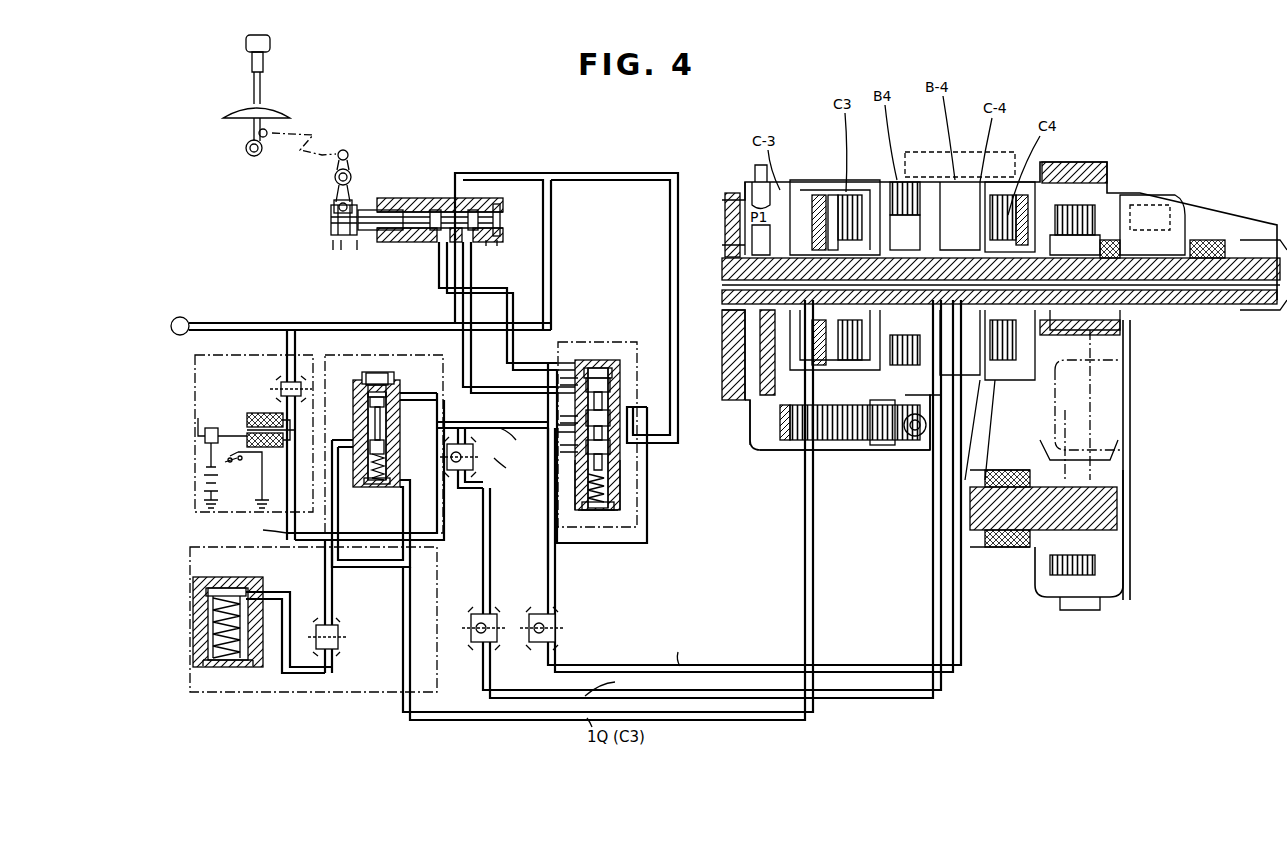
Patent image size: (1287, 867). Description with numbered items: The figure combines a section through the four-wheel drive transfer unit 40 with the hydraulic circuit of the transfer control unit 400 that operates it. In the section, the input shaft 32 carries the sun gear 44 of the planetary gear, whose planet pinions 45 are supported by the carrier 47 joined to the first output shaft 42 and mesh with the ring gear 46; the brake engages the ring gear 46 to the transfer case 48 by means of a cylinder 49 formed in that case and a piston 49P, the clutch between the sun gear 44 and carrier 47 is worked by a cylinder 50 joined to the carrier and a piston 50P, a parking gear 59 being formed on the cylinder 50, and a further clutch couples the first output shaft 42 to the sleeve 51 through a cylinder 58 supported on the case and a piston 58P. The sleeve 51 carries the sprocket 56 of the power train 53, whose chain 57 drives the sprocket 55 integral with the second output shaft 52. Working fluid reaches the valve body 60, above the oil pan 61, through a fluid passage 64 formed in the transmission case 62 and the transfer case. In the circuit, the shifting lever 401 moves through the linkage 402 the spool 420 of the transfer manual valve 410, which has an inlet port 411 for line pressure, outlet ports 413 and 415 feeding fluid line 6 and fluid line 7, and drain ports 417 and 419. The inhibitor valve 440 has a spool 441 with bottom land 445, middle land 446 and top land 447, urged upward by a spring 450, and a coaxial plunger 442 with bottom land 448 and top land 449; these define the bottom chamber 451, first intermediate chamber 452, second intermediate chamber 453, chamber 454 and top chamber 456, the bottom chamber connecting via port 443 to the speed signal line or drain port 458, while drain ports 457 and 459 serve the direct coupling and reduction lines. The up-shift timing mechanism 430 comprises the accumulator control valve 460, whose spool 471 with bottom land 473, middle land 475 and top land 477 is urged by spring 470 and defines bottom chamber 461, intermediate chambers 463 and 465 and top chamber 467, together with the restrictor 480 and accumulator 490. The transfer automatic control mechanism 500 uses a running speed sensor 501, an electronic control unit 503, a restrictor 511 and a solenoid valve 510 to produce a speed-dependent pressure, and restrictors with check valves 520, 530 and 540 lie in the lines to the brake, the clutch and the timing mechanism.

The shifting lever 401 is at (270, 43).
The linkage 402 is at (347, 152).
The transfer manual valve 410 is at (447, 216).
The inlet port 411 is at (476, 204).
The outlet port 413 is at (437, 252).
The outlet port 415 is at (501, 236).
The drain port 417 is at (415, 245).
The drain port 419 is at (494, 241).
The spool 420 is at (330, 221).
The transfer control unit 400 is at (562, 152).
The fluid line 6 is at (448, 294).
The fluid line 7 is at (472, 268).
The transfer automatic control mechanism 500 is at (252, 358).
The restrictor 511 is at (281, 387).
The solenoid valve 510 is at (245, 410).
The electronic control unit 503 is at (241, 423).
The running speed sensor 501 is at (236, 476).
The up-shift timing mechanism 430 is at (355, 358).
The accumulator control valve 460 is at (392, 450).
The upper intermediate chamber 465 is at (365, 400).
The top chamber 467 is at (390, 360).
The top land 477 is at (393, 380).
The middle land 475 is at (386, 402).
The lower intermediate chamber 463 is at (386, 436).
The bottom land 473 is at (387, 466).
The spool 471 is at (362, 484).
The spring 470 is at (380, 486).
The bottom chamber 461 is at (370, 490).
The accumulator 490 is at (238, 566).
The restrictor 480 is at (340, 648).
The restrictor with check valve 520 is at (500, 605).
The restrictor with check valve 530 is at (565, 609).
The restrictor with check valve 540 is at (470, 470).
The inhibitor valve 440 is at (592, 430).
The top chamber 456 is at (598, 372).
The top land 449 is at (606, 386).
The plunger 442 is at (610, 395).
The bottom land 448 is at (606, 418).
The top land 447 is at (606, 432).
The spool 441 is at (606, 448).
The second intermediate chamber 453 is at (606, 440).
The middle land 446 is at (606, 450).
The first intermediate chamber 452 is at (606, 464).
The drain port 458 is at (606, 478).
The port 443 is at (606, 495).
The bottom chamber 451 is at (600, 505).
The chamber 454 is at (572, 405).
The drain port 457 is at (572, 418).
The drain port 459 is at (575, 465).
The bottom land 445 is at (587, 515).
The spring 450 is at (598, 515).
The input shaft 32 is at (745, 195).
The transmission case 62 is at (728, 210).
The cylinder 50 is at (808, 188).
The piston 50P is at (822, 192).
The transfer case 48 is at (832, 192).
The sun gear 44 is at (852, 192).
The cylinder 49 is at (915, 182).
The piston 49P is at (935, 155).
The transfer unit 40 is at (975, 133).
The cylinder 58 is at (1000, 192).
The piston 58P is at (1020, 195).
The sprocket 56 is at (1078, 205).
The four-wheel drive sleeve 51 is at (1108, 240).
The first output shaft 42 is at (1148, 230).
The chain 57 is at (1090, 385).
The power train 53 is at (1141, 449).
The sprocket 55 is at (1105, 570).
The second output shaft 52 is at (988, 520).
The fluid passage 64 is at (760, 448).
The oil pan 61 is at (772, 452).
The parking gear 59 is at (808, 440).
The carrier 47 is at (842, 440).
The planet pinions 45 is at (875, 440).
The valve body 60 is at (912, 437).
The ring gear 46 is at (888, 448).